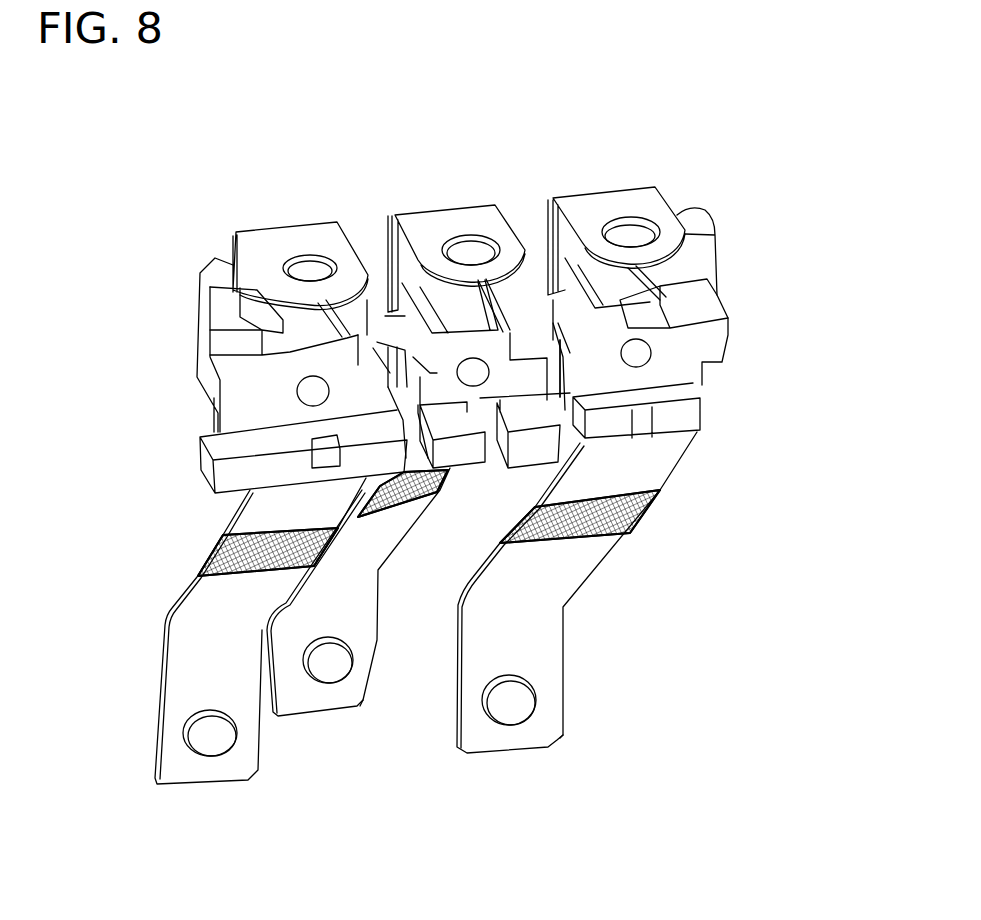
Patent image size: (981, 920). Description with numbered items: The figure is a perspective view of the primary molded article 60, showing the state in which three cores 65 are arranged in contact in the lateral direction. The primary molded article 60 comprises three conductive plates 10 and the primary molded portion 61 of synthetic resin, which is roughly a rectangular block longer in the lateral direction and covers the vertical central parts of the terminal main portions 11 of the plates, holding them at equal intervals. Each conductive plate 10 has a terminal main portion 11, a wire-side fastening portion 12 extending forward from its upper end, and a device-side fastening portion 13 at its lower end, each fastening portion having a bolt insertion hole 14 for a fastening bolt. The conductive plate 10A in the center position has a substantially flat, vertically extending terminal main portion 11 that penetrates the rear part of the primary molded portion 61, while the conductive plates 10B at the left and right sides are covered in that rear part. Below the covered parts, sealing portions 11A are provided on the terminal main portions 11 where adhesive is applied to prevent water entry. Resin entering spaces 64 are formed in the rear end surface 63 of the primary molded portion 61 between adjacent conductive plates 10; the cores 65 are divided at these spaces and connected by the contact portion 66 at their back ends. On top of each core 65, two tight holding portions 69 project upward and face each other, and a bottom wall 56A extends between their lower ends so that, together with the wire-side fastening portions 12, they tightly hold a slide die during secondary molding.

The primary molded article 60 is at (465, 343).
The primary molded portion 61 is at (243, 398).
The rear end surface 63 is at (233, 470).
The resin entering space 64 is at (585, 425).
The core 65 is at (722, 263).
The contact portion 66 is at (365, 335).
The tight holding portion 69 is at (418, 262).
The bottom wall 56A is at (303, 320).
The wire-side fastening portion 12 is at (283, 243).
The bolt insertion hole 14 is at (318, 258).
The conductive plate 10 is at (411, 587).
The conductive plate in the center position 10A is at (383, 643).
The conductive plate at the left or right side 10B is at (587, 585).
The terminal main portion 11 is at (193, 636).
The sealing portion 11A is at (243, 542).
The device-side fastening portion 13 is at (330, 697).